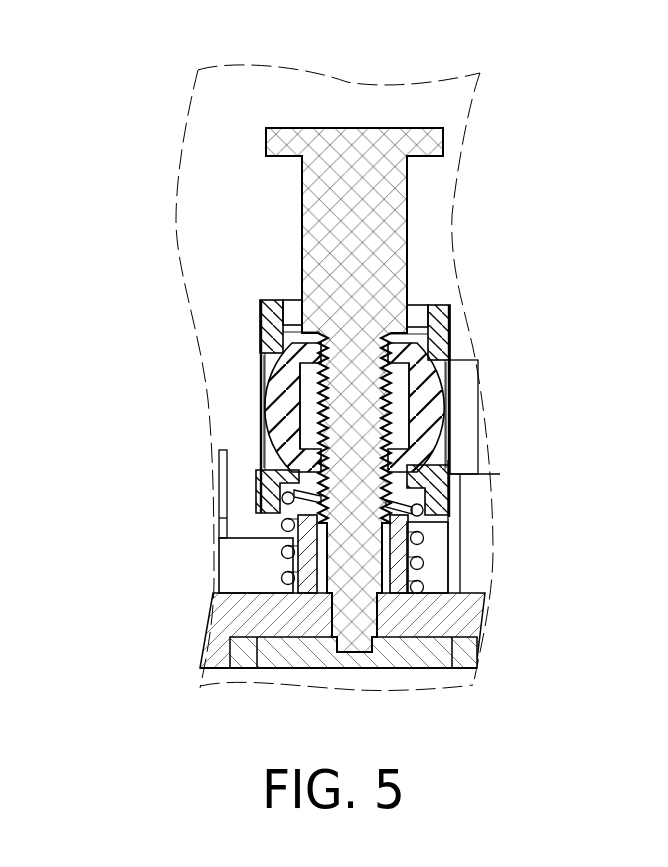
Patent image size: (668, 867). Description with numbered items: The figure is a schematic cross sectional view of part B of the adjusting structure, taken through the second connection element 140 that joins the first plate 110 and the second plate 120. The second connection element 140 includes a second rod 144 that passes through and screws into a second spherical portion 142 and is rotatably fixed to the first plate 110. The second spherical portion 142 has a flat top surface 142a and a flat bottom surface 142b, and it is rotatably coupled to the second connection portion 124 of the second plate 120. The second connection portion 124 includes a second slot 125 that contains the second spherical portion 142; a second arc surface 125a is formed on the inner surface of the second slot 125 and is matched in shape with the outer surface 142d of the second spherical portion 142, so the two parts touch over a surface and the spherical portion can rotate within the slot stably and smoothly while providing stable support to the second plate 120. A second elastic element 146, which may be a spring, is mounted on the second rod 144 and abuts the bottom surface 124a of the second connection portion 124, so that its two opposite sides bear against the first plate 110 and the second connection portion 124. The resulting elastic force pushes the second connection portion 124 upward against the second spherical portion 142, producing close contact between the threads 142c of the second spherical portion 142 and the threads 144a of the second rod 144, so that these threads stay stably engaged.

The part B is at (172, 121).
The first plate 110 is at (460, 617).
The second plate 120 is at (325, 388).
The second connection portion 124 is at (280, 521).
The bottom surface of the second connection portion 124a is at (283, 522).
The second slot 125 is at (266, 438).
The second arc surface 125a is at (258, 479).
The second connection element 140 is at (340, 340).
The second spherical portion 142 is at (340, 405).
The top surface of the second spherical portion 142a is at (450, 318).
The bottom surface of the second spherical portion 142b is at (404, 497).
The threads of the second spherical portion 142c is at (402, 435).
The outer surface of the second spherical portion 142d is at (177, 411).
The second rod 144 is at (384, 253).
The threads of the second rod 144a is at (402, 410).
The second elastic element 146 is at (420, 540).